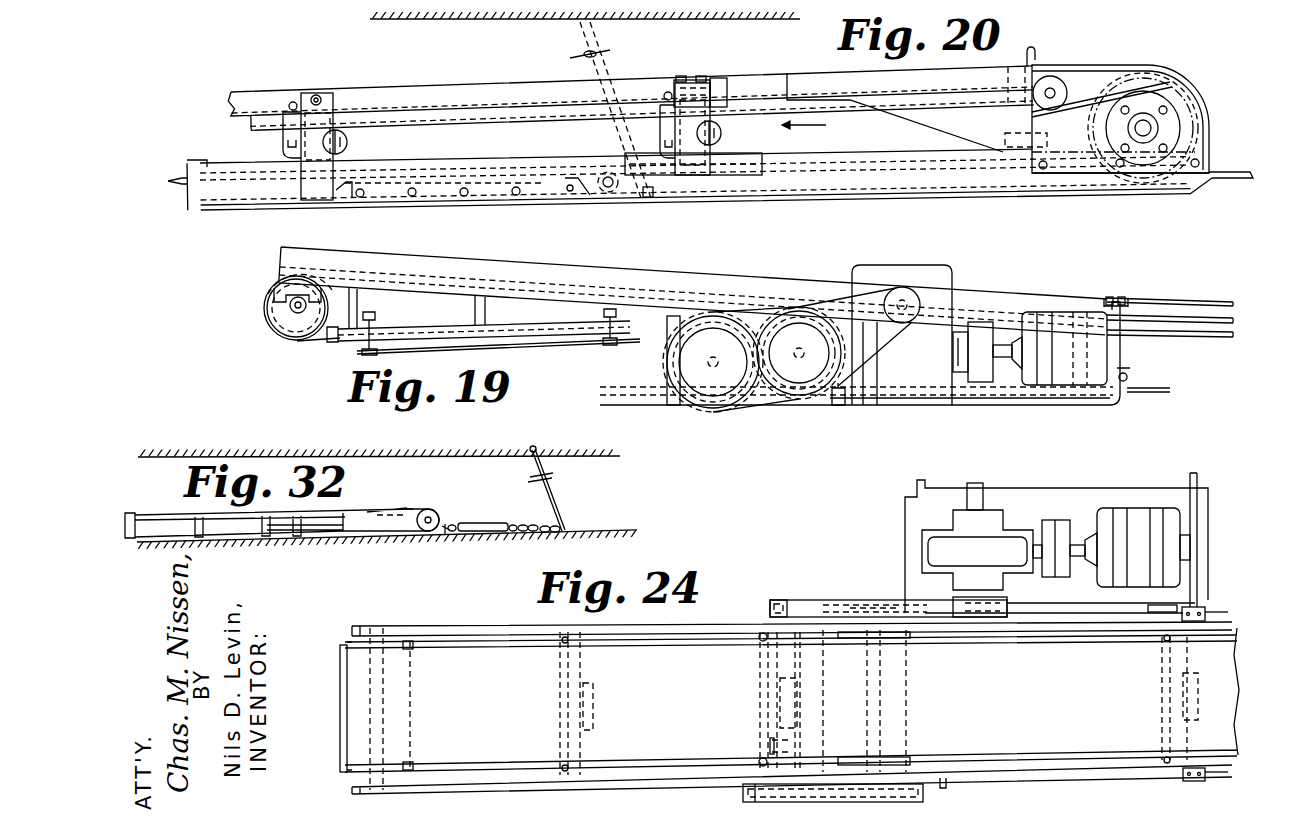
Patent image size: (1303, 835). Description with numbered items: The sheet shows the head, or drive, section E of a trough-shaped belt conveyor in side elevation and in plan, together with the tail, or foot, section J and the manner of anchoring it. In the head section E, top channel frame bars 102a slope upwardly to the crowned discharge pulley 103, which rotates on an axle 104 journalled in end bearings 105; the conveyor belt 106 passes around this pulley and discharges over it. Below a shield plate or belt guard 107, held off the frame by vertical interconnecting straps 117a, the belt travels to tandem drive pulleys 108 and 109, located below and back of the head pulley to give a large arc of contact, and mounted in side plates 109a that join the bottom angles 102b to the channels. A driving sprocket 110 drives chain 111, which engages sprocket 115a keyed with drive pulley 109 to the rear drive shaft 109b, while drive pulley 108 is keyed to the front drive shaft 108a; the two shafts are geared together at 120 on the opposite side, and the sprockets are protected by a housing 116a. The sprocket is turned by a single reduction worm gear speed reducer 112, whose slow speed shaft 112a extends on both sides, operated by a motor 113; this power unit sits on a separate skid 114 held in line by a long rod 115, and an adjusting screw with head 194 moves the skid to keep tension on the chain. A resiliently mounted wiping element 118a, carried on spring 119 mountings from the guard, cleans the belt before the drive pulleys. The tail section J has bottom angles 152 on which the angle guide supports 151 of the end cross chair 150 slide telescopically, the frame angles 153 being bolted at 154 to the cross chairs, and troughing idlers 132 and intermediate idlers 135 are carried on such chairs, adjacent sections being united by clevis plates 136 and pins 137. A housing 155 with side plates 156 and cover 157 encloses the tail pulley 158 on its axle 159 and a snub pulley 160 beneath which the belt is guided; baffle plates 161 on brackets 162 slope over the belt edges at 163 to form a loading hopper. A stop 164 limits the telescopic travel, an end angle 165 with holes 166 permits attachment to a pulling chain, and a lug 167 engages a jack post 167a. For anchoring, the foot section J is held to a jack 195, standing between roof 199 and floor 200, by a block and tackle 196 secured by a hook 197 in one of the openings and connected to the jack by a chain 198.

In FIG. 19, the top channel frame bars 102a is at (758, 280).
In FIG. 24, the top channel frame bars 102a is at (432, 792).
In FIG. 19, the bottom angles 102b is at (982, 399).
In FIG. 19, the discharge pulley 103 is at (268, 303).
In FIG. 24, the discharge pulley 103 is at (344, 641).
In FIG. 19, the axle 104 is at (290, 311).
In FIG. 19, the end bearings 105 is at (295, 324).
In FIG. 20, the conveyor belt 106 is at (748, 106).
In FIG. 19, the conveyor belt 106 is at (323, 343).
In FIG. 24, the conveyor belt 106 is at (457, 665).
In FIG. 19, the belt guard 107 is at (547, 336).
In FIG. 19, the drive pulley 108 is at (672, 386).
In FIG. 24, the drive pulley 108 is at (760, 702).
In FIG. 24, the front drive shaft 108a is at (768, 750).
In FIG. 19, the drive pulley 109 is at (797, 384).
In FIG. 24, the drive pulley 109 is at (909, 717).
In FIG. 19, the side plates 109a is at (905, 330).
In FIG. 24, the rear drive shaft 109b is at (882, 688).
In FIG. 19, the driving sprocket 110 is at (908, 302).
In FIG. 24, the driving sprocket 110 is at (1008, 603).
In FIG. 19, the chain 111 is at (890, 345).
In FIG. 24, the chain 111 is at (952, 607).
In FIG. 19, the speed reducer 112 is at (930, 378).
In FIG. 24, the speed reducer 112 is at (1002, 512).
In FIG. 24, the slow speed shaft 112a is at (977, 487).
In FIG. 19, the motor 113 is at (1054, 342).
In FIG. 24, the motor 113 is at (1138, 517).
In FIG. 24, the skid 114 is at (1174, 492).
In FIG. 19, the rod 115 is at (1018, 398).
In FIG. 24, the rod 115 is at (1163, 613).
In FIG. 24, the sprocket 115a is at (837, 606).
In FIG. 24, the housing 116a is at (783, 600).
In FIG. 19, the vertical interconnecting straps 117a is at (480, 313).
In FIG. 19, the wiping element 118a is at (496, 352).
In FIG. 19, the spring 119 is at (374, 323).
In FIG. 24, the gearing 120 is at (743, 797).
In FIG. 20, the troughing idlers 132 is at (283, 142).
In FIG. 24, the troughing idlers 132 is at (1163, 727).
In FIG. 20, the intermediate idlers 135 is at (348, 143).
In FIG. 24, the intermediate idlers 135 is at (1199, 684).
In FIG. 19, the clevis plates 136 is at (1128, 300).
In FIG. 24, the clevis plates 136 is at (1207, 613).
In FIG. 19, the pins 137 is at (1121, 296).
In FIG. 20, the end cross chair 150 is at (698, 110).
In FIG. 20, the angle guide supports 151 is at (737, 166).
In FIG. 20, the bottom angles 152 is at (812, 190).
In FIG. 20, the frame angles 153 is at (468, 94).
In FIG. 20, the bolts 154 is at (319, 94).
In FIG. 20, the housing 155 is at (1083, 174).
In FIG. 20, the side plates 156 is at (1083, 81).
In FIG. 20, the cover 157 is at (1147, 64).
In FIG. 20, the tail pulley 158 is at (1185, 108).
In FIG. 20, the axle 159 is at (1151, 131).
In FIG. 20, the snub pulley 160 is at (1053, 84).
In FIG. 20, the baffle plates 161 is at (986, 80).
In FIG. 20, the brackets 162 is at (1023, 149).
In FIG. 20, the sloping edge portions 163 is at (806, 96).
In FIG. 20, the stop 164 is at (200, 159).
In FIG. 20, the angle 165 is at (1244, 172).
In FIG. 20, the holes 166 is at (1232, 180).
In FIG. 20, the lug 167 is at (655, 196).
In FIG. 20, the jack post 167a is at (607, 62).
In FIG. 19, the screw head 194 is at (1130, 378).
In FIG. 32, the jack 195 is at (556, 500).
In FIG. 32, the block and tackle 196 is at (479, 516).
In FIG. 32, the hook 197 is at (446, 535).
In FIG. 32, the chain 198 is at (537, 535).
In FIG. 32, the roof 199 is at (538, 451).
In FIG. 32, the floor 200 is at (592, 537).
In FIG. 20, the tail section J is at (1196, 60).
In FIG. 32, the tail section J is at (426, 498).
In FIG. 19, the head section E is at (545, 261).